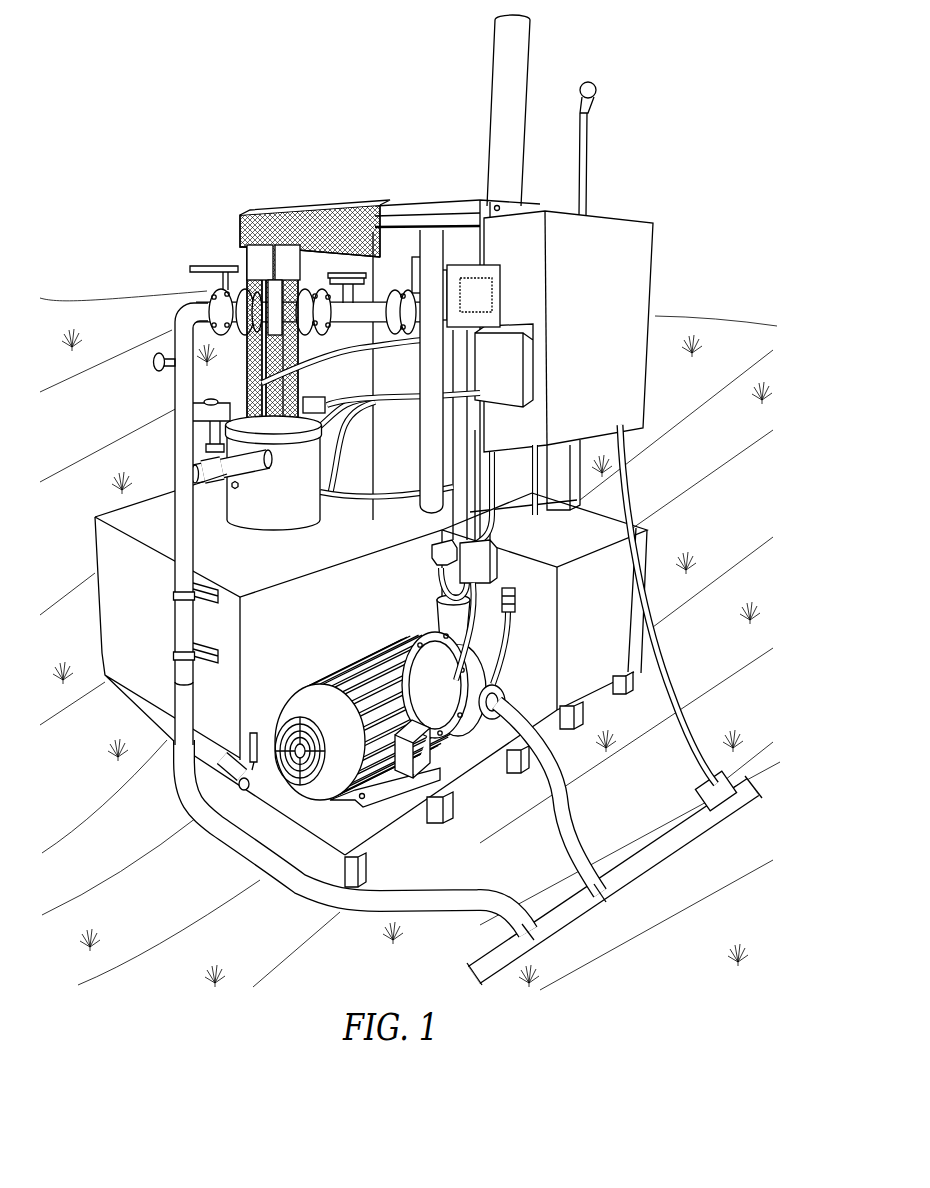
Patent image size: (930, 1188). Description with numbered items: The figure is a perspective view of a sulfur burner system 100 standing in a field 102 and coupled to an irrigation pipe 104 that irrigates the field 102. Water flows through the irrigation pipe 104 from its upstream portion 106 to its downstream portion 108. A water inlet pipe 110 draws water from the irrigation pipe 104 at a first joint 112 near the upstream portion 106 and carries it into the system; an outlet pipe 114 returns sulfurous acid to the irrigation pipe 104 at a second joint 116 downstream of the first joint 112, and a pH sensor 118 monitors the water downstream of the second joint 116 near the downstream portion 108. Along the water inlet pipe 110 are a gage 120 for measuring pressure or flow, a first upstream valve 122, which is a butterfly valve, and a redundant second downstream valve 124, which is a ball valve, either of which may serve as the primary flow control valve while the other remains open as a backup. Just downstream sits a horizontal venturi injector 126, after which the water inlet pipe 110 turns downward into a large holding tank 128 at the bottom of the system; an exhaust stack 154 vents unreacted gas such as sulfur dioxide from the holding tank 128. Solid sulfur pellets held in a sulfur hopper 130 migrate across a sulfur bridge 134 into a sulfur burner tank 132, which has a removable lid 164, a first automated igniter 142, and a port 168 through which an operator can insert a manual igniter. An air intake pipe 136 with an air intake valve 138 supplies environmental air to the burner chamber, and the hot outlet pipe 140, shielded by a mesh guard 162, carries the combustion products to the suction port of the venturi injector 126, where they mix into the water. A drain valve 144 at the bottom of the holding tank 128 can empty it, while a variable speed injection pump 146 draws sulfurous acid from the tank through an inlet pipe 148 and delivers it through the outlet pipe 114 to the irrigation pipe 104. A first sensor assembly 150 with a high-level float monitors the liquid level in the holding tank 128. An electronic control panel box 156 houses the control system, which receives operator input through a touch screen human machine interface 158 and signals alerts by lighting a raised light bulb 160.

The sulfur burner system 100 is at (205, 116).
The field 102 is at (724, 428).
The irrigation pipe 104 is at (650, 858).
The upstream portion 106 is at (490, 972).
The downstream portion 108 is at (752, 787).
The water inlet pipe 110 is at (365, 543).
The first joint 112 is at (533, 937).
The outlet pipe 114 is at (560, 812).
The second joint 116 is at (607, 893).
The pH sensor 118 is at (713, 787).
The gage 120 is at (152, 360).
The first upstream valve 122 is at (226, 308).
The second downstream valve 124 is at (272, 300).
The venturi injector 126 is at (360, 306).
The holding tank 128 is at (118, 632).
The sulfur hopper 130 is at (393, 377).
The sulfur burner tank 132 is at (250, 512).
The sulfur bridge 134 is at (330, 495).
The air intake pipe 136 is at (203, 461).
The air intake valve 138 is at (237, 471).
The outlet pipe 140 is at (291, 292).
The first automated igniter 142 is at (313, 512).
The drain valve 144 is at (238, 768).
The injection pump 146 is at (362, 824).
The inlet pipe 148 is at (480, 670).
The first sensor assembly 150 is at (433, 558).
The exhaust stack 154 is at (513, 50).
The electronic control panel box 156 is at (637, 260).
The touch screen human machine interface 158 is at (468, 297).
The light bulb 160 is at (597, 90).
The mesh guard 162 is at (247, 230).
The removable lid 164 is at (198, 417).
The port 168 is at (238, 490).